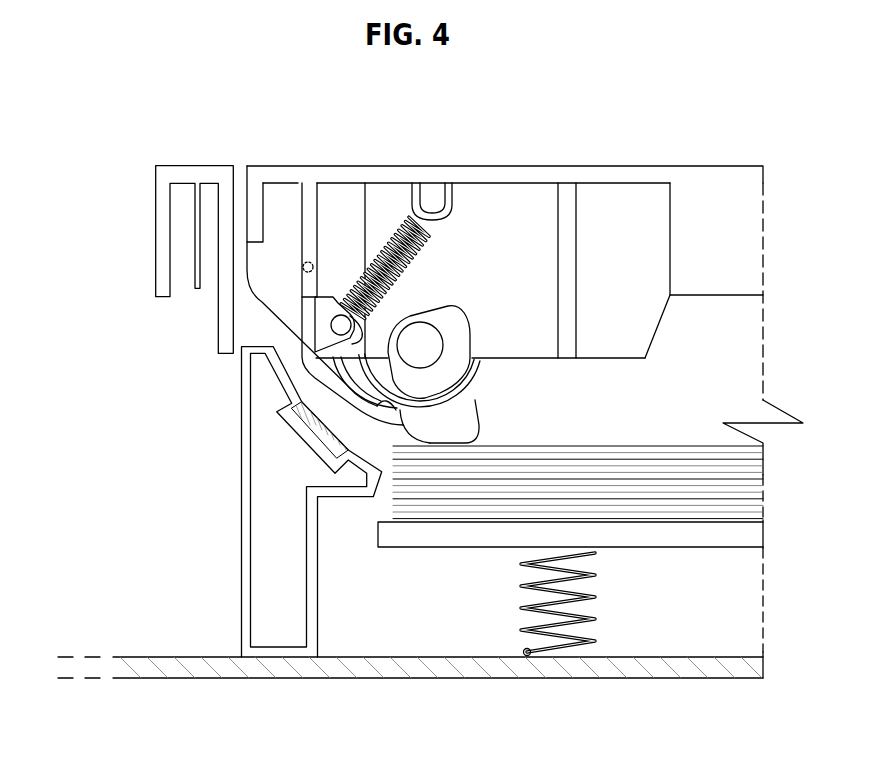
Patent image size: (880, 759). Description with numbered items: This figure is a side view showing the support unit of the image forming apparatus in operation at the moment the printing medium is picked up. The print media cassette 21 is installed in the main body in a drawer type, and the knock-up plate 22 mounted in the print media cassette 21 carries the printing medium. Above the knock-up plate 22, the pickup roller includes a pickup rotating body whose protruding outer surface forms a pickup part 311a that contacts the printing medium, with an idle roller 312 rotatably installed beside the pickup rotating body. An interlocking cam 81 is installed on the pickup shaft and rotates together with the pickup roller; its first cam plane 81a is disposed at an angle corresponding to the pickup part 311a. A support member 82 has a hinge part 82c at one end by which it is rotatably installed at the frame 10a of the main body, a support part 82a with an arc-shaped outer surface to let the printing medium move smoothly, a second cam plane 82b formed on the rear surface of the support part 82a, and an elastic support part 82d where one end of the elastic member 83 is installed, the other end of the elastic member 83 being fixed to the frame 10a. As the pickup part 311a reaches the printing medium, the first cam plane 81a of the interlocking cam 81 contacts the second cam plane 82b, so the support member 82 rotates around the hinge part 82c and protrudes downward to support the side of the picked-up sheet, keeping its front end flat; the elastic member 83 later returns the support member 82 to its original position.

The frame 10a is at (530, 181).
The elastic member 83 is at (383, 218).
The interlocking cam 81 is at (446, 296).
The first cam plane 81a is at (488, 376).
The idle roller 312 is at (487, 376).
The pickup part 311a is at (512, 378).
The support member 82 is at (460, 480).
The support part 82a is at (438, 444).
The second cam plane 82b is at (403, 440).
The hinge part 82c is at (306, 266).
The elastic support part 82d is at (323, 318).
The print media cassette 21 is at (405, 662).
The knock-up plate 22 is at (662, 535).